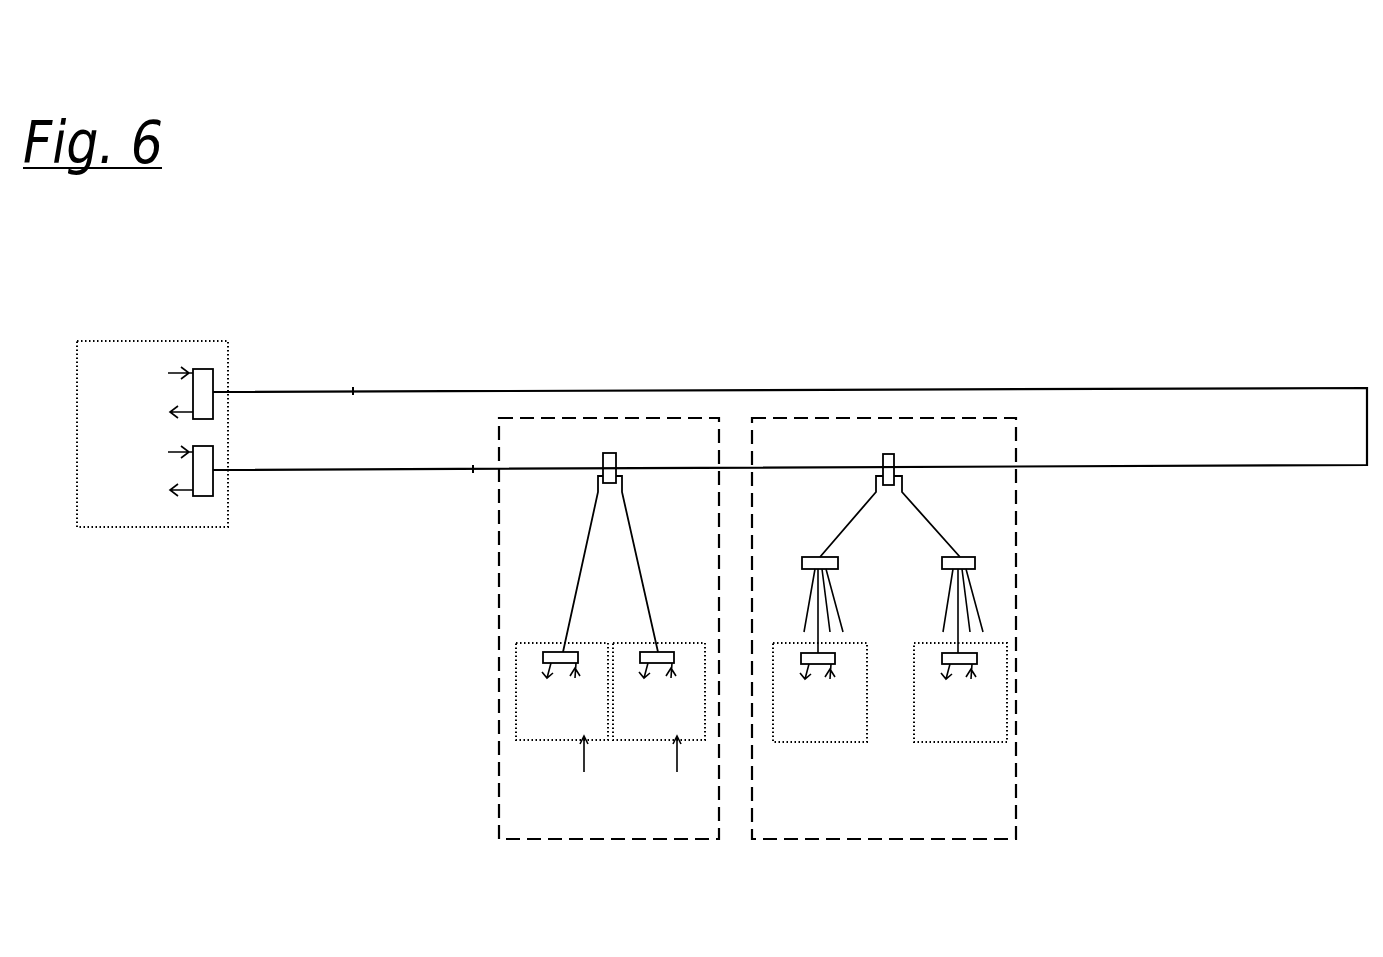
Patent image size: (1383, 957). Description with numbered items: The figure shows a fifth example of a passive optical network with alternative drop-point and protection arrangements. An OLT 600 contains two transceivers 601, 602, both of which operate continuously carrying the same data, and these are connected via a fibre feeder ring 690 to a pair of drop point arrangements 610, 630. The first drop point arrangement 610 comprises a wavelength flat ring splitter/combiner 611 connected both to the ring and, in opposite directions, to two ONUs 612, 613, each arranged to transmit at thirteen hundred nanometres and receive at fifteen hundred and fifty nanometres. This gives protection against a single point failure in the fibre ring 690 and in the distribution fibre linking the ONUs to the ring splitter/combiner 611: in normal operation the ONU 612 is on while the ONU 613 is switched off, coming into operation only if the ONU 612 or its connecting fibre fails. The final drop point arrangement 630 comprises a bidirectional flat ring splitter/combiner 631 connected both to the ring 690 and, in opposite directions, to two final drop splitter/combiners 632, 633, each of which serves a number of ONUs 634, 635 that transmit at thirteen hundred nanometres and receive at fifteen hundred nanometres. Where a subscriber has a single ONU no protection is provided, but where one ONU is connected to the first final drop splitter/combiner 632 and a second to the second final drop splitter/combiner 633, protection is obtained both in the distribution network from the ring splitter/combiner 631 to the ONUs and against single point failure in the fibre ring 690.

The OLT 600 is at (152, 437).
The transceiver 601 is at (203, 382).
The transceiver 602 is at (203, 483).
The fibre feeder ring 690 is at (790, 419).
The drop point arrangement 610 is at (609, 641).
The wavelength flat ring splitter/combiner 611 is at (610, 541).
The ONU 612 is at (556, 720).
The ONU 613 is at (663, 720).
The drop point arrangement 630 is at (884, 640).
The bidirectional flat ring splitter/combiner 631 is at (890, 493).
The final drop splitter/combiner 632 is at (814, 593).
The final drop splitter/combiner 633 is at (973, 595).
The ONU 634 is at (820, 704).
The ONU 635 is at (960, 702).